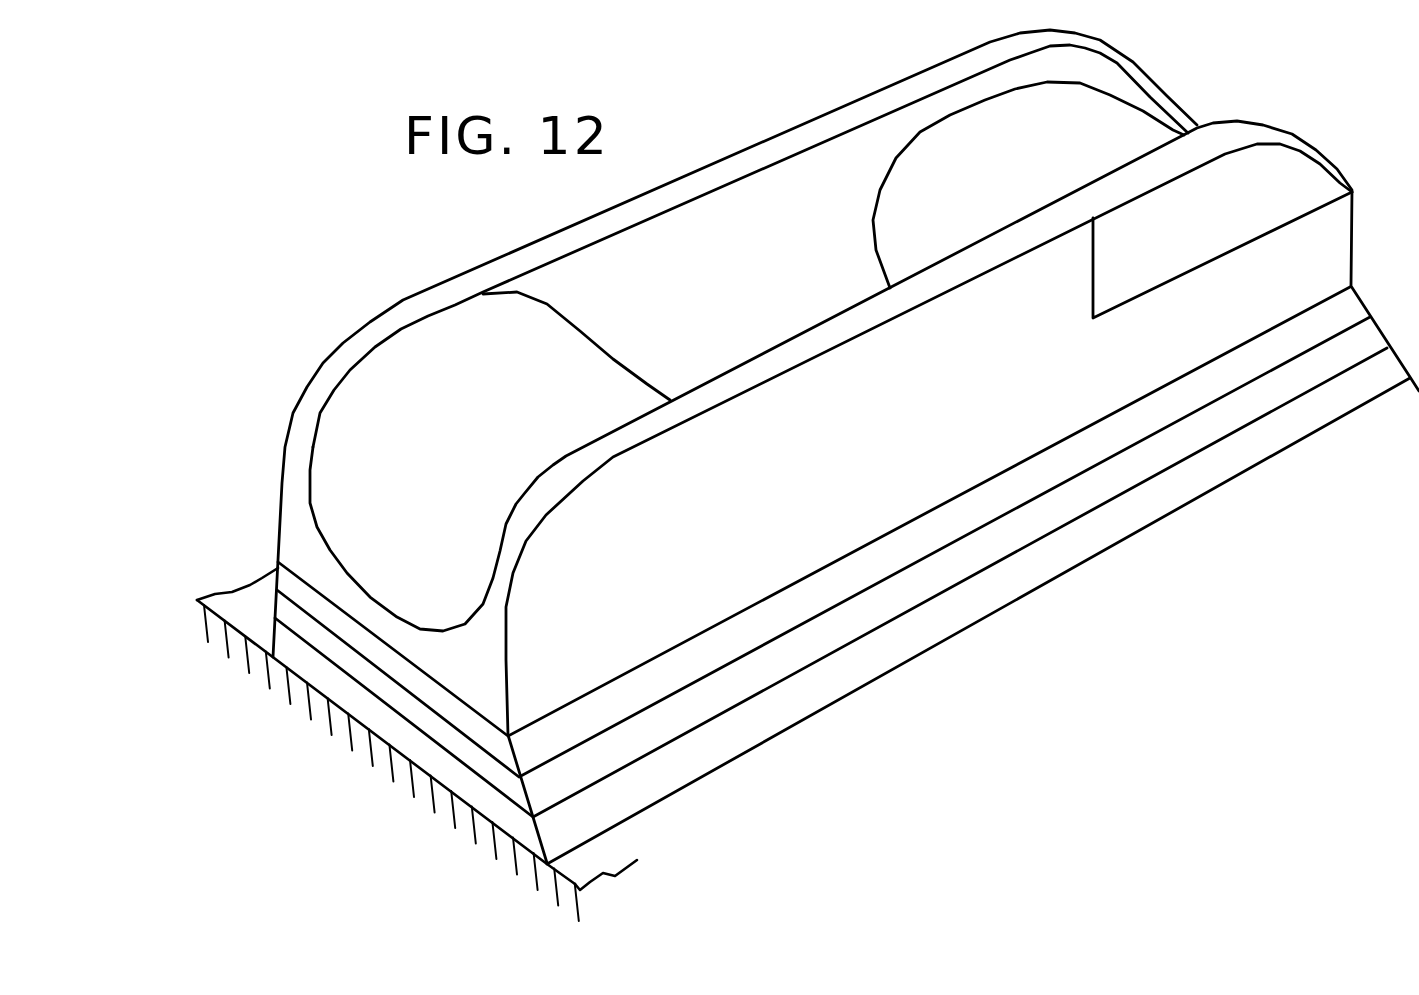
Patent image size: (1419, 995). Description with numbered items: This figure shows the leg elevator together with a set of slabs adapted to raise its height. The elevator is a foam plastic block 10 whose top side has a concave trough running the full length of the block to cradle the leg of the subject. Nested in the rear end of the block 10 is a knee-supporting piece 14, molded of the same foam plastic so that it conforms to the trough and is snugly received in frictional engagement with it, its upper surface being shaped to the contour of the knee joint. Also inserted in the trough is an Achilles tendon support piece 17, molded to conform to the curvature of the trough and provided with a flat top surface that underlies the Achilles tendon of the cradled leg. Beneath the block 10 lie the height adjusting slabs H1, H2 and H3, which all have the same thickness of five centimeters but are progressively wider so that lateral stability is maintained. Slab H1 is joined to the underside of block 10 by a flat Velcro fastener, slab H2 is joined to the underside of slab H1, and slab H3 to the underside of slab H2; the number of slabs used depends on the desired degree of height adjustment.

The block 10 is at (292, 452).
The knee-supporting piece 14 is at (453, 333).
The Achilles tendon support piece 17 is at (963, 135).
The height adjusting slab H1 is at (287, 580).
The height adjusting slab H2 is at (317, 632).
The height adjusting slab H3 is at (330, 687).